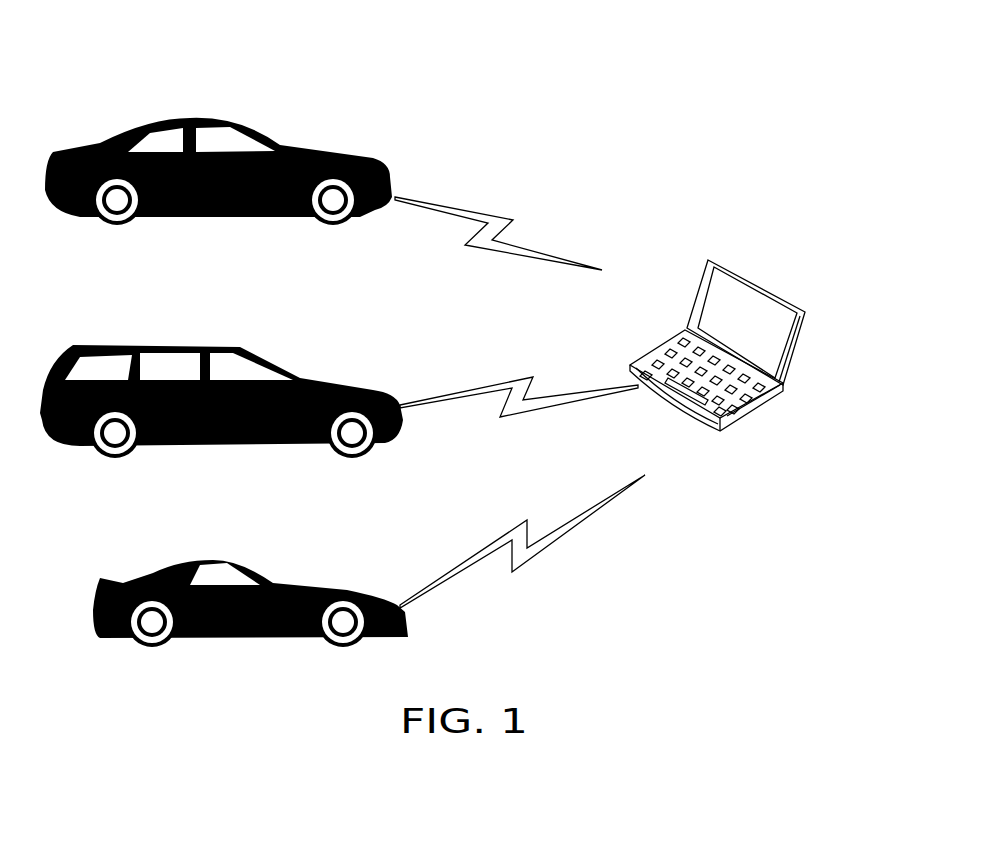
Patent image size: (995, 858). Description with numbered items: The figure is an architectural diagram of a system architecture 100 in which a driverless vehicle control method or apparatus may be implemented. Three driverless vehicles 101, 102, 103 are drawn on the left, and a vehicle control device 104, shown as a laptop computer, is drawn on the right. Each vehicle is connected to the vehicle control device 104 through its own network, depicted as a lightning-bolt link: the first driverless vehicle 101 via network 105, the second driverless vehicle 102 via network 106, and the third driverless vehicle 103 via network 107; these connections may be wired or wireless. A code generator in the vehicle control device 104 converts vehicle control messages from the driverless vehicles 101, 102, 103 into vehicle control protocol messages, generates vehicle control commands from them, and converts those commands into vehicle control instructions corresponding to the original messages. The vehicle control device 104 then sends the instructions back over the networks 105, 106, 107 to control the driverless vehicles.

The system architecture 100 is at (860, 37).
The driverless vehicle 101 is at (377, 163).
The driverless vehicle 102 is at (390, 383).
The driverless vehicle 103 is at (328, 585).
The vehicle control device 104 is at (748, 272).
The network 105 is at (540, 248).
The network 106 is at (562, 397).
The network 107 is at (572, 517).